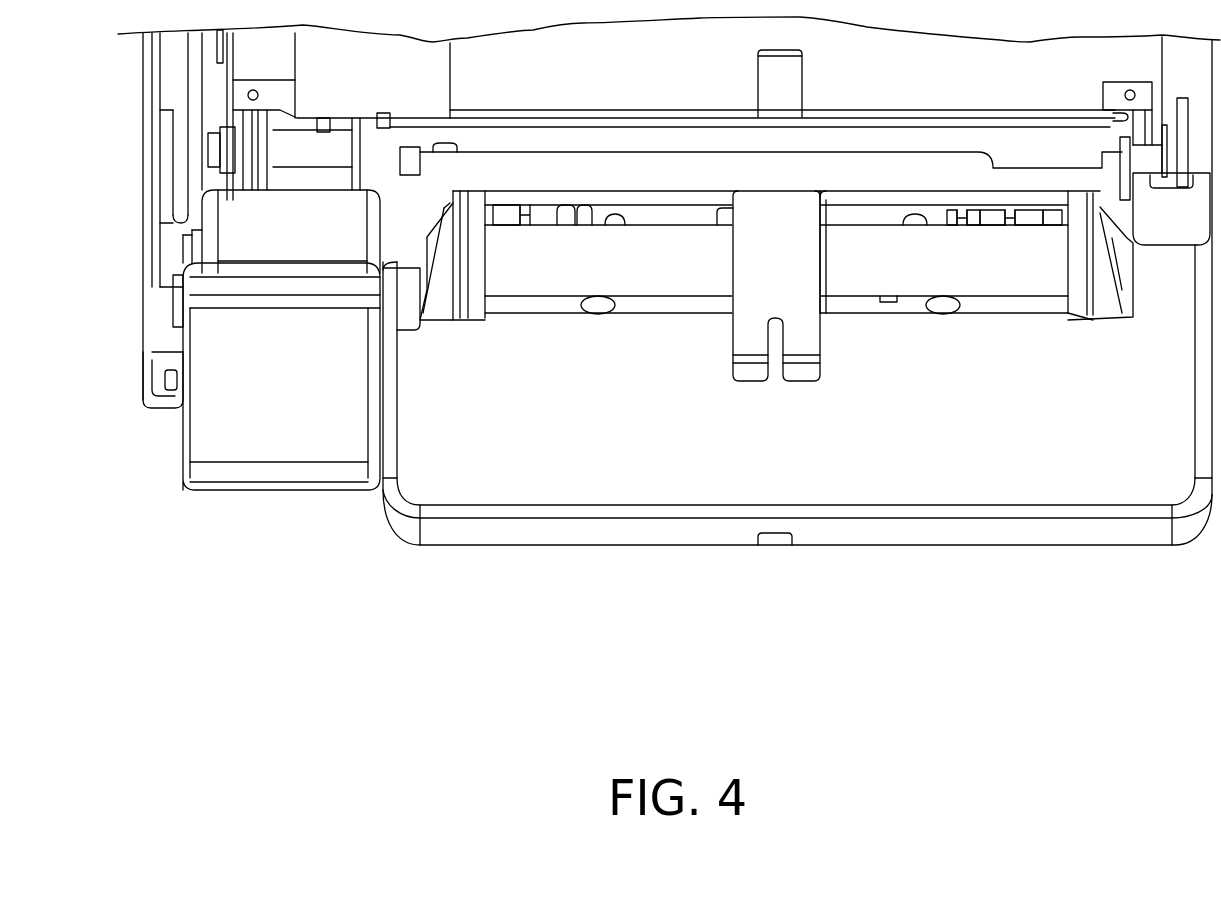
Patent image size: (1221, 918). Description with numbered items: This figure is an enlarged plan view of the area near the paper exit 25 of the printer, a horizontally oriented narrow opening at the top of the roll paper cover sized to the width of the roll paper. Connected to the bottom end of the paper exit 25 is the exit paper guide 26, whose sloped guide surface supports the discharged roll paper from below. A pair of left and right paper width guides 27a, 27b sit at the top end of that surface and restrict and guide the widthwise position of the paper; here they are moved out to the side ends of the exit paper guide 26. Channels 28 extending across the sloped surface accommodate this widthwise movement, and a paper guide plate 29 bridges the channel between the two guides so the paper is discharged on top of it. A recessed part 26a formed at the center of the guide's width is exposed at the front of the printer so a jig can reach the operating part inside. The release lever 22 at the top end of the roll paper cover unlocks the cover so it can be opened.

The release lever 22 is at (290, 447).
The paper exit 25 is at (630, 186).
The exit paper guide 26 is at (525, 532).
The recessed part 26a is at (795, 537).
The paper width guide 27a is at (1107, 300).
The paper width guide 27b is at (445, 295).
The channels 28 is at (880, 218).
The paper guide plate 29 is at (742, 337).